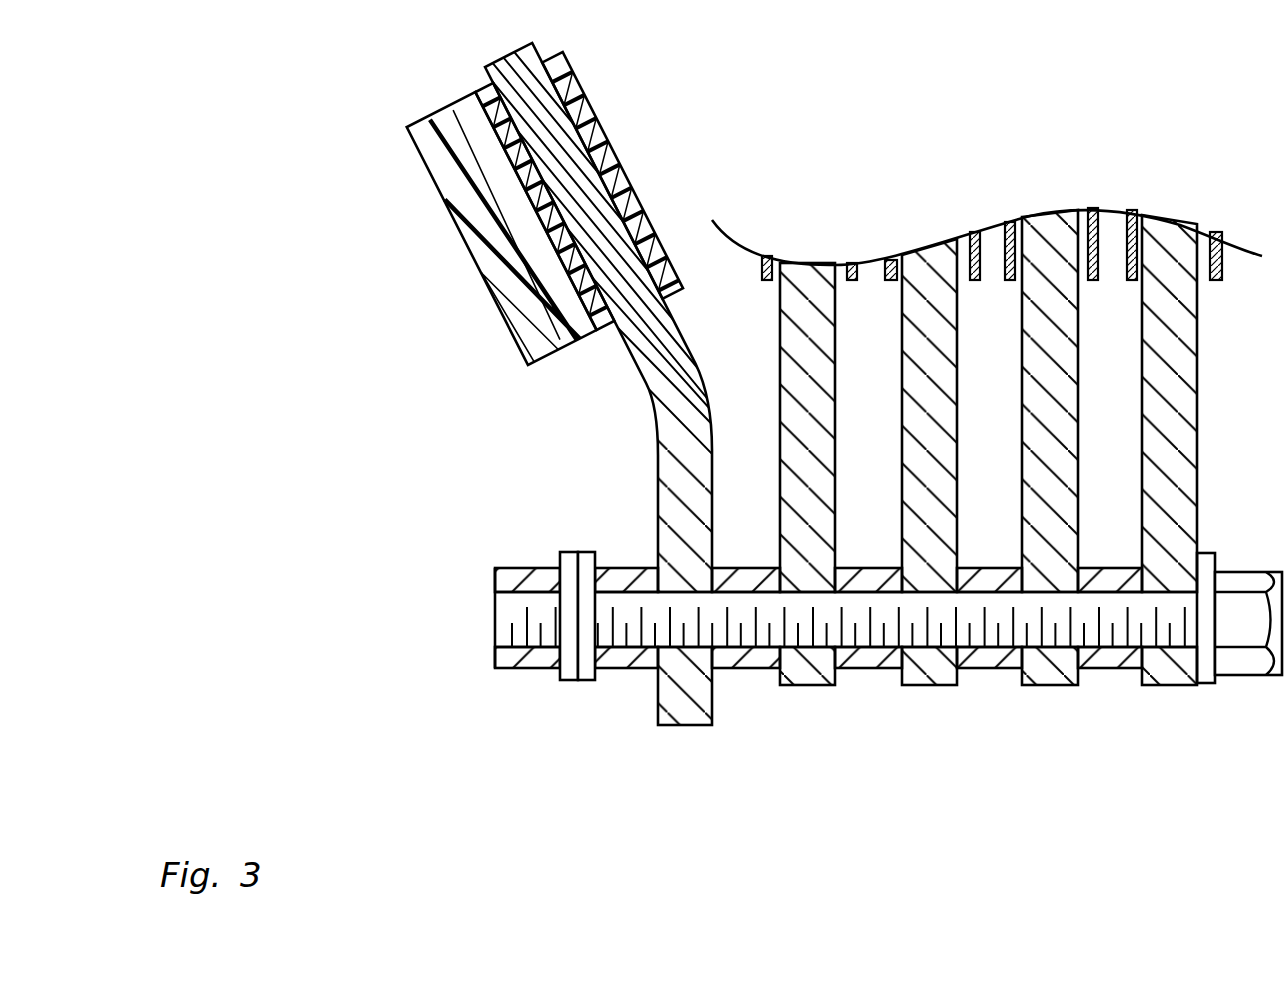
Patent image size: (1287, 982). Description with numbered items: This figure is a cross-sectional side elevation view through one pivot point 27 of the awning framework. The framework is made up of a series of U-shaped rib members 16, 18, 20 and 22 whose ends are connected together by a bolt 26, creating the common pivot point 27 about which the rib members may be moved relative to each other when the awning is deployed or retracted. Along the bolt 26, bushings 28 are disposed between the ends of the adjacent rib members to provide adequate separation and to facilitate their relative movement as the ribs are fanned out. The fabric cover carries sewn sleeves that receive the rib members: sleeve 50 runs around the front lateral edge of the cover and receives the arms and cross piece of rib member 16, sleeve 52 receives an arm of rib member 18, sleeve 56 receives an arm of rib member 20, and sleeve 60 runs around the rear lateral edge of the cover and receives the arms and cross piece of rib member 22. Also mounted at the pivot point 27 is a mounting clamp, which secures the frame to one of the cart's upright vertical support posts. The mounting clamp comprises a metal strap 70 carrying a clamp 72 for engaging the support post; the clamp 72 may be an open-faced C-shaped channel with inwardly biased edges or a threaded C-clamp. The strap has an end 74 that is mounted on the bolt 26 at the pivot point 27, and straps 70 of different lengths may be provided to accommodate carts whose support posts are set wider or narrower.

The rib member 16 is at (1165, 500).
The rib member 18 is at (1050, 500).
The rib member 20 is at (925, 500).
The rib member 22 is at (800, 500).
The bolt 26 is at (507, 610).
The pivot point 27 is at (494, 727).
The bushings 28 is at (745, 668).
The sleeve 50 is at (1142, 275).
The sleeve 52 is at (1017, 277).
The sleeve 56 is at (896, 278).
The sleeve 60 is at (773, 277).
The metal strap 70 is at (661, 422).
The clamp 72 is at (458, 204).
The end of mounting clamp 74 is at (690, 713).